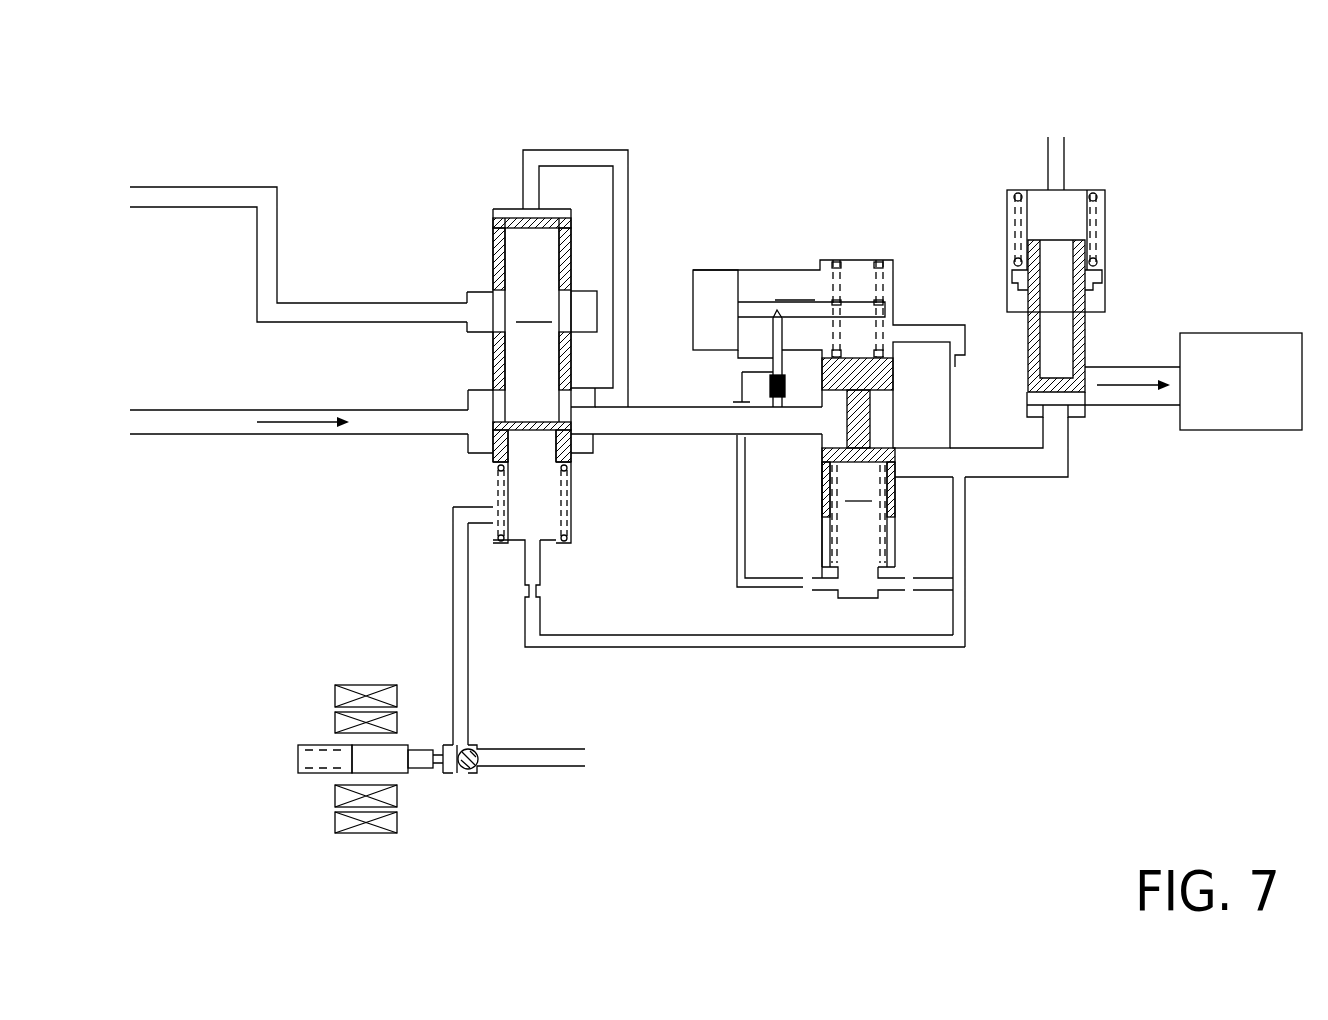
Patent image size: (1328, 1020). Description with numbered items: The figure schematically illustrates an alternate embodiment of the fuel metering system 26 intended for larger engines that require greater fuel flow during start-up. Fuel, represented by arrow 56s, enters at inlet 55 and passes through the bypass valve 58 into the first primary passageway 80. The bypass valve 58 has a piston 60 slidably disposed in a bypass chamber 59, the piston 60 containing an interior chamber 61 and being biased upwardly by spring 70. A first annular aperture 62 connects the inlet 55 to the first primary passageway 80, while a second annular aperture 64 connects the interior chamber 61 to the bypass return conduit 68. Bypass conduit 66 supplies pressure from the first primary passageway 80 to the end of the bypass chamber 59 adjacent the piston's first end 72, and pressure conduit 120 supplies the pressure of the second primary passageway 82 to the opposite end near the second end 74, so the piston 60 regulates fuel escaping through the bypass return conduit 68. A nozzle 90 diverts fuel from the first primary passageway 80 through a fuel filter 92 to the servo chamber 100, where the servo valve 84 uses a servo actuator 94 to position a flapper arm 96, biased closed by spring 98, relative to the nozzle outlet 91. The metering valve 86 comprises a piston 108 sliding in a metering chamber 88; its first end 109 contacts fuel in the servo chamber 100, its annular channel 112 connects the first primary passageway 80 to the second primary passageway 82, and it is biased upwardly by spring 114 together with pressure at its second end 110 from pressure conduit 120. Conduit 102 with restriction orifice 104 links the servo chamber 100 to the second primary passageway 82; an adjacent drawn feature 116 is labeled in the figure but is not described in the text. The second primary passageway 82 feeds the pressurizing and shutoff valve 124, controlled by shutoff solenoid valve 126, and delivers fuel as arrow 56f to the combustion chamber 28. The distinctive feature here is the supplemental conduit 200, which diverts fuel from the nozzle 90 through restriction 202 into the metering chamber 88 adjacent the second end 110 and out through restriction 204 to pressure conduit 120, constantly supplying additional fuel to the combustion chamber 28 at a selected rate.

The fuel metering system 26 is at (850, 785).
The combustion chamber 28 is at (1268, 432).
The inlet 55 is at (177, 410).
The fuel flow arrow 56s is at (300, 423).
The fuel delivery arrow 56f is at (1133, 385).
The bypass valve 58 is at (474, 336).
The bypass chamber 59 is at (575, 212).
The piston 60 is at (493, 350).
The interior chamber 61 is at (532, 354).
The first annular aperture 62 is at (493, 383).
The second annular aperture 64 is at (493, 286).
The bypass conduit 66 is at (627, 155).
The bypass return conduit 68 is at (205, 195).
The spring 70 is at (563, 523).
The first end 72 is at (517, 218).
The second end 74 is at (493, 480).
The first primary passageway 80 is at (678, 435).
The second primary passageway 82 is at (1057, 470).
The servo valve 84 is at (869, 367).
The metering valve 86 is at (810, 530).
The metering chamber 88 is at (858, 514).
The nozzle 90 is at (738, 362).
The outlet 91 is at (738, 328).
The fuel filter 92 is at (770, 385).
The servo actuator 94 is at (713, 293).
The flapper arm 96 is at (770, 268).
The spring 98 is at (877, 285).
The servo chamber 100 is at (811, 296).
The conduit 102 is at (958, 330).
The restriction orifice 104 is at (967, 360).
The piston 108 is at (815, 408).
The first end 109 is at (952, 412).
The second end 110 is at (953, 480).
The annular channel 112 is at (895, 453).
The spring 114 is at (887, 547).
The housing wall 116 is at (893, 325).
The pressure conduit 120 is at (683, 650).
The pressurizing and shutoff valve 124 is at (1117, 323).
The shutoff solenoid valve 126 is at (450, 833).
The supplemental conduit 200 is at (735, 513).
The restriction 202 is at (805, 590).
The restriction 204 is at (910, 590).